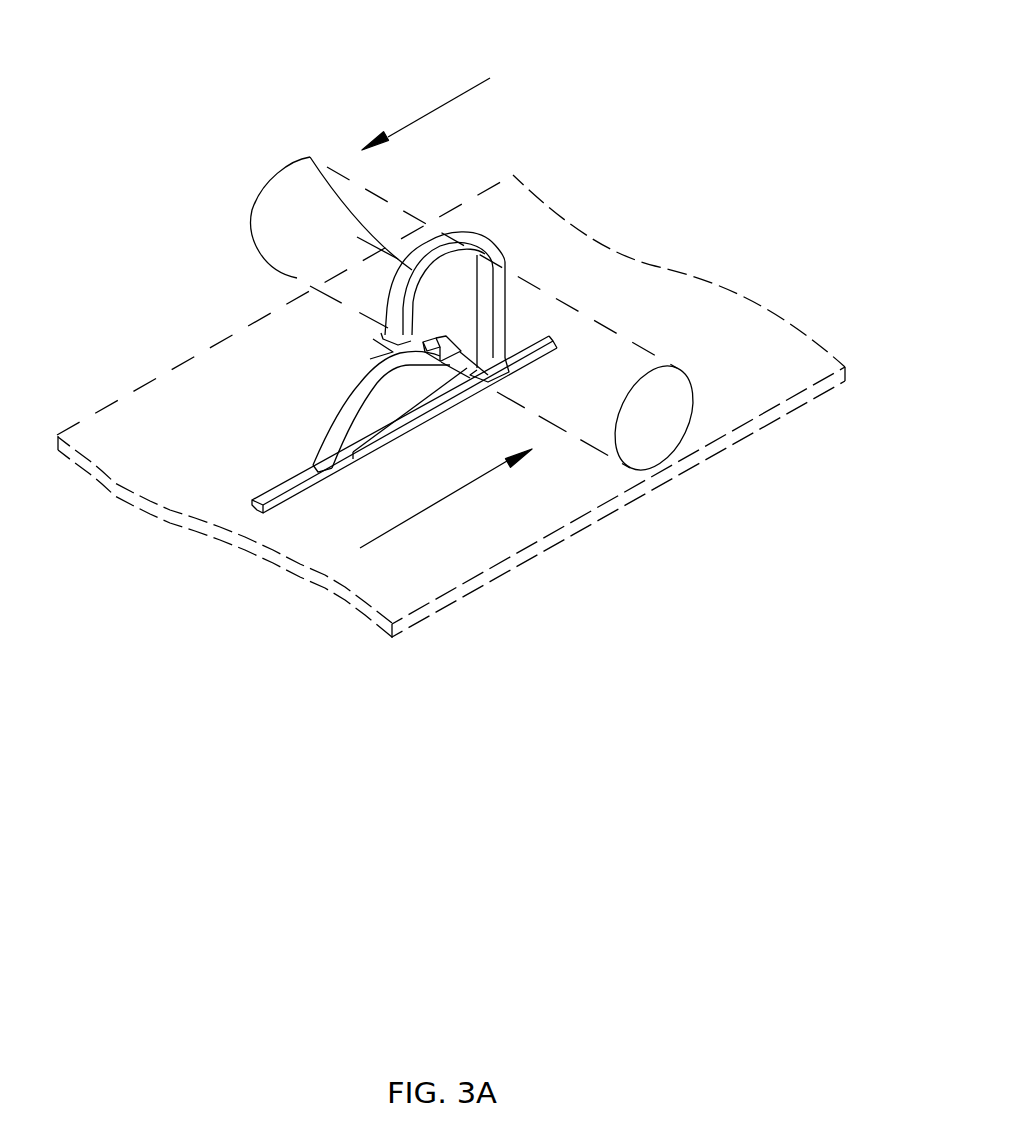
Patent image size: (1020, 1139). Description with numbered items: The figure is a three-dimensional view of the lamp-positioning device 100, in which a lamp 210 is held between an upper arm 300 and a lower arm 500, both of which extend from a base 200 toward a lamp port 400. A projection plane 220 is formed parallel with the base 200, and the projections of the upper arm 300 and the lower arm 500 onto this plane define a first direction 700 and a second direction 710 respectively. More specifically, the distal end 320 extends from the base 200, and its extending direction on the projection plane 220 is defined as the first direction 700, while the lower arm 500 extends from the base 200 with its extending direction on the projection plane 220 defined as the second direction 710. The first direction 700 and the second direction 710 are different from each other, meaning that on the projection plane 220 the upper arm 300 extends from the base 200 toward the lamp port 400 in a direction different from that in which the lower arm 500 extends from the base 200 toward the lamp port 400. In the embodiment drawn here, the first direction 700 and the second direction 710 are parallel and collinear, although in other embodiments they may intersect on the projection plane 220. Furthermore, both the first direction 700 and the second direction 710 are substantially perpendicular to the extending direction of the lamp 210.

The lamp-positioning device 100 is at (678, 45).
The base 200 is at (283, 493).
The lamp 210 is at (690, 423).
The projection plane 220 is at (590, 528).
The upper arm 300 is at (460, 232).
The distal end 320 is at (311, 158).
The lamp port 400 is at (393, 352).
The lower arm 500 is at (362, 403).
The first direction 700 is at (426, 114).
The second direction 710 is at (446, 498).